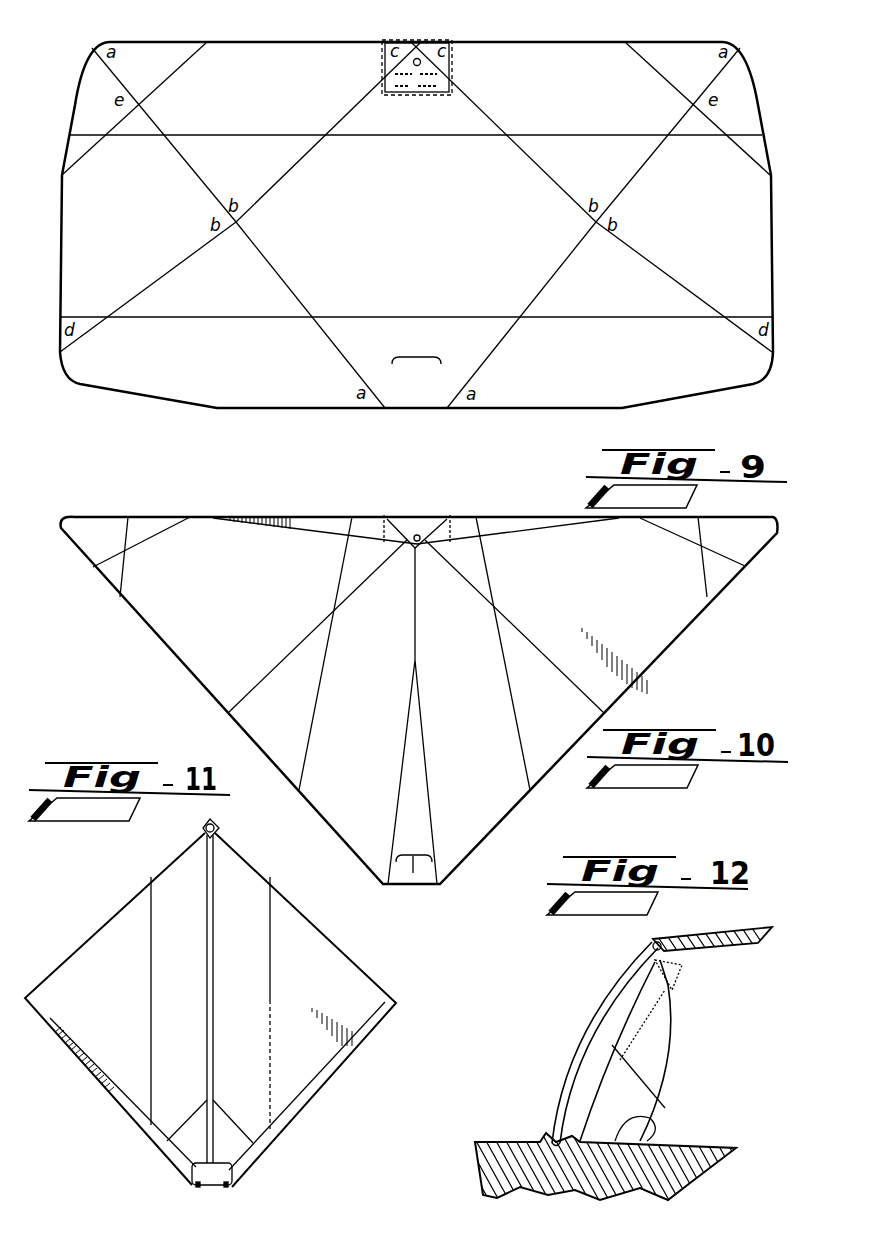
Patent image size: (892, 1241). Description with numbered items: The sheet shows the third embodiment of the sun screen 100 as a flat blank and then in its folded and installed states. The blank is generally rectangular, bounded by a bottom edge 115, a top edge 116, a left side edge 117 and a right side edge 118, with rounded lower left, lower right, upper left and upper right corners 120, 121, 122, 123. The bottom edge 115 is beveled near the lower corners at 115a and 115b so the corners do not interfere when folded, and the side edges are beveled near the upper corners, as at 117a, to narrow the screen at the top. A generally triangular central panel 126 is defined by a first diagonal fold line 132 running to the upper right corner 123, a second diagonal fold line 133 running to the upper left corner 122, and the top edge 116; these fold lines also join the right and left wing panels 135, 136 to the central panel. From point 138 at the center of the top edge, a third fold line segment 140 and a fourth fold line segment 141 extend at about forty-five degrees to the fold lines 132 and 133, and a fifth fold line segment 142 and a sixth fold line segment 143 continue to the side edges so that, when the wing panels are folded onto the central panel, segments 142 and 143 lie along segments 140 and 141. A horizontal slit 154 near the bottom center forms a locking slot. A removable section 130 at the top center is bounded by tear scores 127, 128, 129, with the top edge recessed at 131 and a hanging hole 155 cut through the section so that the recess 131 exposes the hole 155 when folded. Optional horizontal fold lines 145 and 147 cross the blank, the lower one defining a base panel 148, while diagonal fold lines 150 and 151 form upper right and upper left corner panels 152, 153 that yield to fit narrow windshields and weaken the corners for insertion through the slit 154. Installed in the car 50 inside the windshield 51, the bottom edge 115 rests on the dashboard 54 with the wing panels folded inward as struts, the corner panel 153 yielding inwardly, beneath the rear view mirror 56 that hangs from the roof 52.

In FIG. 12, the car 50 is at (534, 1090).
In FIG. 12, the windshield 51 is at (577, 1058).
In FIG. 12, the roof 52 is at (688, 930).
In FIG. 12, the dashboard 54 is at (718, 1140).
In FIG. 12, the rear view mirror 56 is at (640, 968).
In FIG. 9, the sun screen 100 is at (695, 418).
In FIG. 10, the sun screen 100 is at (140, 676).
In FIG. 9, the bottom edge 115 is at (495, 410).
In FIG. 10, the bottom edge 115 is at (437, 820).
In FIG. 11, the bottom edge 115 is at (353, 955).
In FIG. 12, the bottom edge 115 is at (642, 1122).
In FIG. 9, the beveled portion of bottom edge 115a is at (135, 395).
In FIG. 10, the beveled portion of bottom edge 115a is at (418, 640).
In FIG. 9, the beveled portion of bottom edge 115b is at (650, 402).
In FIG. 10, the beveled portion of bottom edge 115b is at (415, 650).
In FIG. 9, the top edge 116 is at (535, 42).
In FIG. 11, the top edge 116 is at (207, 912).
In FIG. 9, the left side edge 117 is at (62, 255).
In FIG. 9, the beveled portion of left side edge 117a is at (70, 118).
In FIG. 9, the right side edge 118 is at (758, 100).
In FIG. 9, the lower left corner 120 is at (60, 382).
In FIG. 10, the lower left corner 120 is at (428, 561).
In FIG. 9, the lower right corner 121 is at (770, 383).
In FIG. 10, the lower right corner 121 is at (408, 571).
In FIG. 9, the upper left corner 122 is at (87, 40).
In FIG. 10, the upper left corner 122 is at (777, 533).
In FIG. 11, the upper left corner 122 is at (230, 1185).
In FIG. 9, the upper right corner 123 is at (770, 30).
In FIG. 10, the upper right corner 123 is at (58, 516).
In FIG. 11, the upper right corner 123 is at (197, 1185).
In FIG. 9, the central panel 126 is at (412, 231).
In FIG. 12, the central panel 126 is at (648, 995).
In FIG. 9, the tear score 127 is at (383, 50).
In FIG. 11, the tear score 127 is at (191, 808).
In FIG. 9, the tear score 128 is at (391, 95).
In FIG. 9, the tear score 129 is at (455, 46).
In FIG. 11, the tear score 129 is at (215, 870).
In FIG. 9, the removable section 130 is at (445, 118).
In FIG. 10, the removable section 130 is at (395, 516).
In FIG. 11, the removable section 130 is at (213, 822).
In FIG. 9, the recess 131 is at (449, 42).
In FIG. 10, the recess 131 is at (428, 516).
In FIG. 11, the recess 131 is at (220, 832).
In FIG. 9, the first diagonal fold line 132 is at (555, 272).
In FIG. 11, the first diagonal fold line 132 is at (222, 840).
In FIG. 9, the second diagonal fold line 133 is at (270, 265).
In FIG. 10, the second diagonal fold line 133 is at (553, 770).
In FIG. 11, the second diagonal fold line 133 is at (318, 1090).
In FIG. 12, the second diagonal fold line 133 is at (683, 1002).
In FIG. 9, the right wing panel 135 is at (707, 203).
In FIG. 10, the right wing panel 135 is at (273, 738).
In FIG. 9, the left wing panel 136 is at (147, 182).
In FIG. 10, the left wing panel 136 is at (598, 688).
In FIG. 12, the left wing panel 136 is at (637, 1102).
In FIG. 9, the point at center of top edge 138 is at (417, 40).
In FIG. 10, the point at center of top edge 138 is at (414, 514).
In FIG. 11, the point at center of top edge 138 is at (200, 830).
In FIG. 9, the third diagonal fold line segment 140 is at (540, 174).
In FIG. 10, the third diagonal fold line segment 140 is at (400, 516).
In FIG. 11, the third diagonal fold line segment 140 is at (118, 905).
In FIG. 9, the fourth fold line segment 141 is at (358, 122).
In FIG. 10, the fourth fold line segment 141 is at (470, 530).
In FIG. 9, the fifth fold line segment 142 is at (660, 276).
In FIG. 10, the fifth fold line segment 142 is at (290, 645).
In FIG. 9, the sixth fold line segment 143 is at (185, 262).
In FIG. 10, the sixth fold line segment 143 is at (528, 610).
In FIG. 12, the sixth fold line segment 143 is at (653, 1086).
In FIG. 9, the first horizontal fold line 145 is at (573, 135).
In FIG. 11, the first horizontal fold line 145 is at (155, 988).
In FIG. 9, the second horizontal fold line 147 is at (366, 317).
In FIG. 9, the base panel 148 is at (295, 393).
In FIG. 9, the seventh diagonal fold line 150 is at (660, 76).
In FIG. 10, the seventh diagonal fold line 150 is at (672, 532).
In FIG. 11, the seventh diagonal fold line 150 is at (245, 1120).
In FIG. 9, the eighth diagonal fold line 151 is at (178, 72).
In FIG. 10, the eighth diagonal fold line 151 is at (167, 533).
In FIG. 11, the eighth diagonal fold line 151 is at (190, 1115).
In FIG. 12, the eighth diagonal fold line 151 is at (672, 1003).
In FIG. 9, the upper right corner panel 152 is at (697, 50).
In FIG. 9, the upper left corner panel 153 is at (150, 52).
In FIG. 12, the upper left corner panel 153 is at (680, 967).
In FIG. 9, the slit 154 is at (416, 355).
In FIG. 10, the slit 154 is at (398, 888).
In FIG. 11, the slit 154 is at (227, 1160).
In FIG. 9, the hole 155 is at (417, 66).
In FIG. 10, the hole 155 is at (410, 548).
In FIG. 11, the hole 155 is at (218, 828).